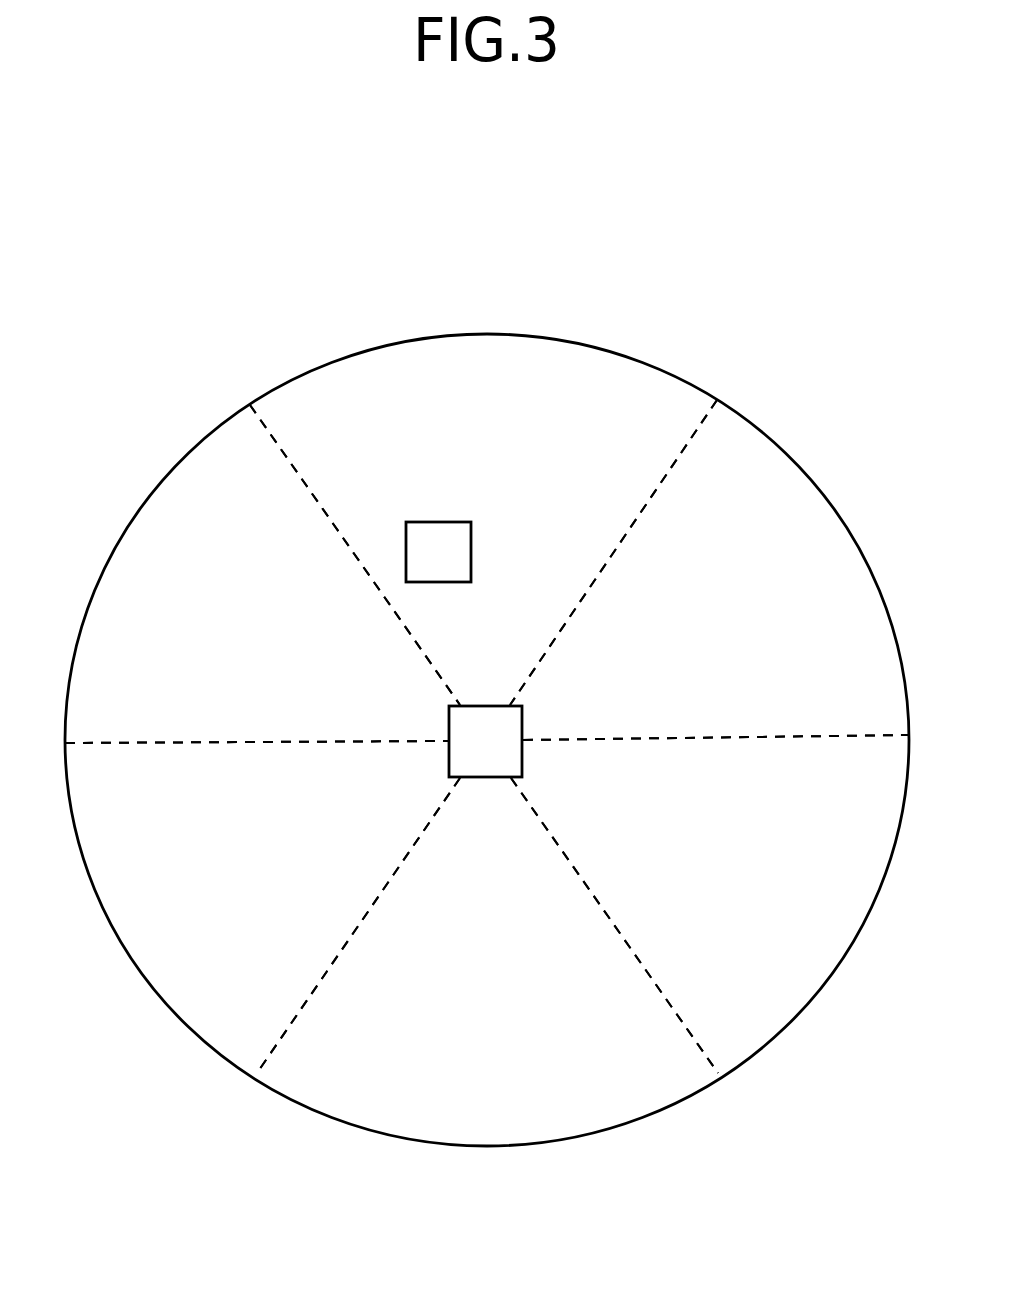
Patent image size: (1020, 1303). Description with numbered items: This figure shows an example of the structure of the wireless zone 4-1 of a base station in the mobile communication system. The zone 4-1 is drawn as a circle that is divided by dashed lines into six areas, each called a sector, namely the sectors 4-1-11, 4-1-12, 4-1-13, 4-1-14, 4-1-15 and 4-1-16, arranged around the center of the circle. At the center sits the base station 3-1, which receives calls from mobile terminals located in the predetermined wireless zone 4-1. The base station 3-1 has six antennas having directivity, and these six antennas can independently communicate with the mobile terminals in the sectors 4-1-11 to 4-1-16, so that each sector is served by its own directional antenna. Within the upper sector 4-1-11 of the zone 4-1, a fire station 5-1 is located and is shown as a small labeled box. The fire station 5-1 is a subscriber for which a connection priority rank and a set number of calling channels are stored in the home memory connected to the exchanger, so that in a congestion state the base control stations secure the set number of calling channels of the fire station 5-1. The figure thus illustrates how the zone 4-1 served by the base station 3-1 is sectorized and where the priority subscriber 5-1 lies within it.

The wireless zone 4-1 is at (684, 338).
The sector 4-1-11 is at (483, 552).
The sector 4-1-12 is at (709, 570).
The sector 4-1-13 is at (710, 904).
The sector 4-1-14 is at (487, 925).
The sector 4-1-15 is at (262, 907).
The sector 4-1-16 is at (262, 574).
The base station 3-1 is at (524, 721).
The fire station 5-1 is at (473, 545).